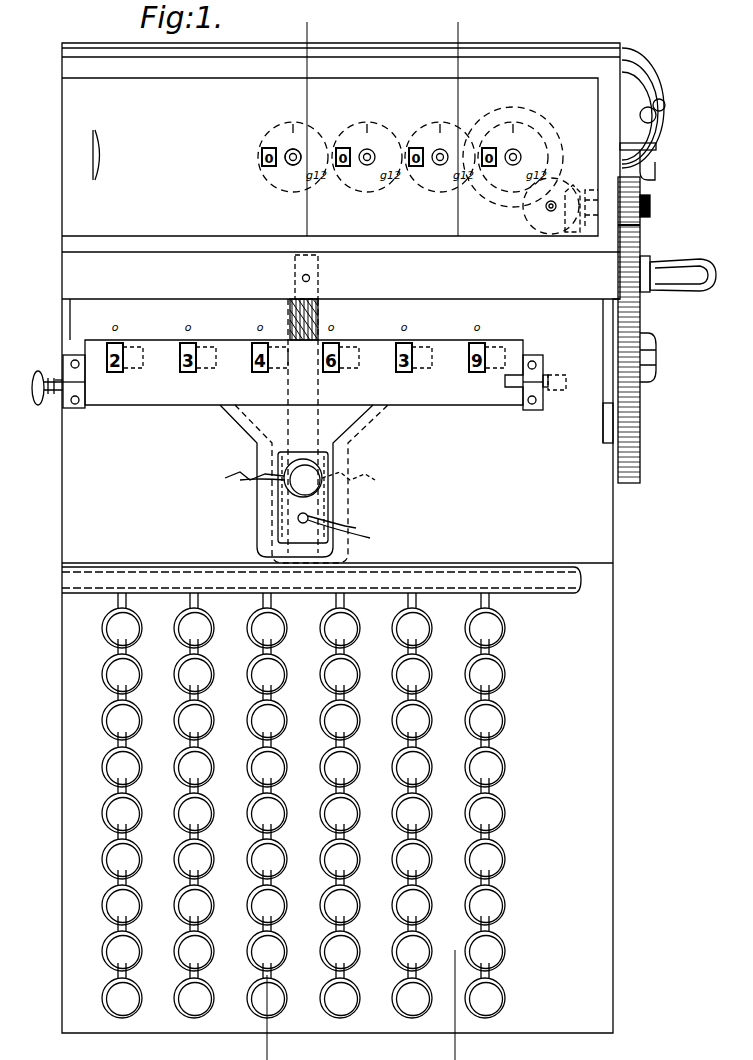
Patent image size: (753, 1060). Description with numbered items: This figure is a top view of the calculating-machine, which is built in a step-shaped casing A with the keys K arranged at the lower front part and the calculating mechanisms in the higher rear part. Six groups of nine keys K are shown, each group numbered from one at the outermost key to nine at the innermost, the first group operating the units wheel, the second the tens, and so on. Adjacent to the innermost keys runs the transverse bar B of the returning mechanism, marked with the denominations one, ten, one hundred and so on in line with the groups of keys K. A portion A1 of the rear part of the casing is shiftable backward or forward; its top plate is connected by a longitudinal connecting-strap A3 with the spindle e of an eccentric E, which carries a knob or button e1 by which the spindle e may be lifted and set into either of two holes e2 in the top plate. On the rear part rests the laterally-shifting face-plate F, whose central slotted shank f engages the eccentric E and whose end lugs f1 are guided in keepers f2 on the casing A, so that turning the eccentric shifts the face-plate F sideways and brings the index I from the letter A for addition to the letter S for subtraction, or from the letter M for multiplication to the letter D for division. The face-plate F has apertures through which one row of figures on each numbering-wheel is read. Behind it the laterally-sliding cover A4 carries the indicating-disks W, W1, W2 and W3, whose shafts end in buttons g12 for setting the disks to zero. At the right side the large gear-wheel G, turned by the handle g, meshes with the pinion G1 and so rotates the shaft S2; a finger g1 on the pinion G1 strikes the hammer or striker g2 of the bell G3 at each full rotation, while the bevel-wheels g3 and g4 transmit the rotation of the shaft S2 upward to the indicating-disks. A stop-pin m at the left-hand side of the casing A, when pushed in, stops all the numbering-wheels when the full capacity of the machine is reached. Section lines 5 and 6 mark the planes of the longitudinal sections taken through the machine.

The casing A is at (330, 551).
The shiftable rear part of casing A1 is at (320, 259).
The connecting-strap A3 is at (318, 312).
The laterally-sliding cover A4 is at (204, 160).
The section line 5 is at (289, 532).
The section line 6 is at (454, 530).
The indicating-disk W is at (513, 152).
The indicating-disk W1 is at (440, 144).
The indicating-disk W2 is at (367, 144).
The indicating-disk W3 is at (293, 145).
The button g12 is at (293, 157).
The bevel-wheel g4 is at (551, 207).
The bevel-wheel g3 is at (578, 185).
The gear-wheel G is at (641, 330).
The pinion G1 is at (640, 228).
The bell G3 is at (648, 88).
The handle g is at (678, 267).
The finger g1 is at (655, 180).
The hammer or striker g2 is at (652, 126).
The shaft S2 is at (655, 206).
The face-plate F is at (296, 431).
The slotted shank f is at (301, 500).
The lug f1 is at (58, 380).
The keeper f2 is at (78, 408).
The stop-pin m is at (32, 400).
The eccentric E is at (288, 470).
The spindle e is at (323, 529).
The knob or button e1 is at (303, 478).
The hole e2 is at (344, 535).
The index I is at (262, 491).
The initial letter for subtraction S is at (353, 486).
The initial letter for multiplication M is at (244, 503).
The initial letter for division D is at (347, 522).
The transverse bar B is at (570, 585).
The keys K is at (326, 1008).